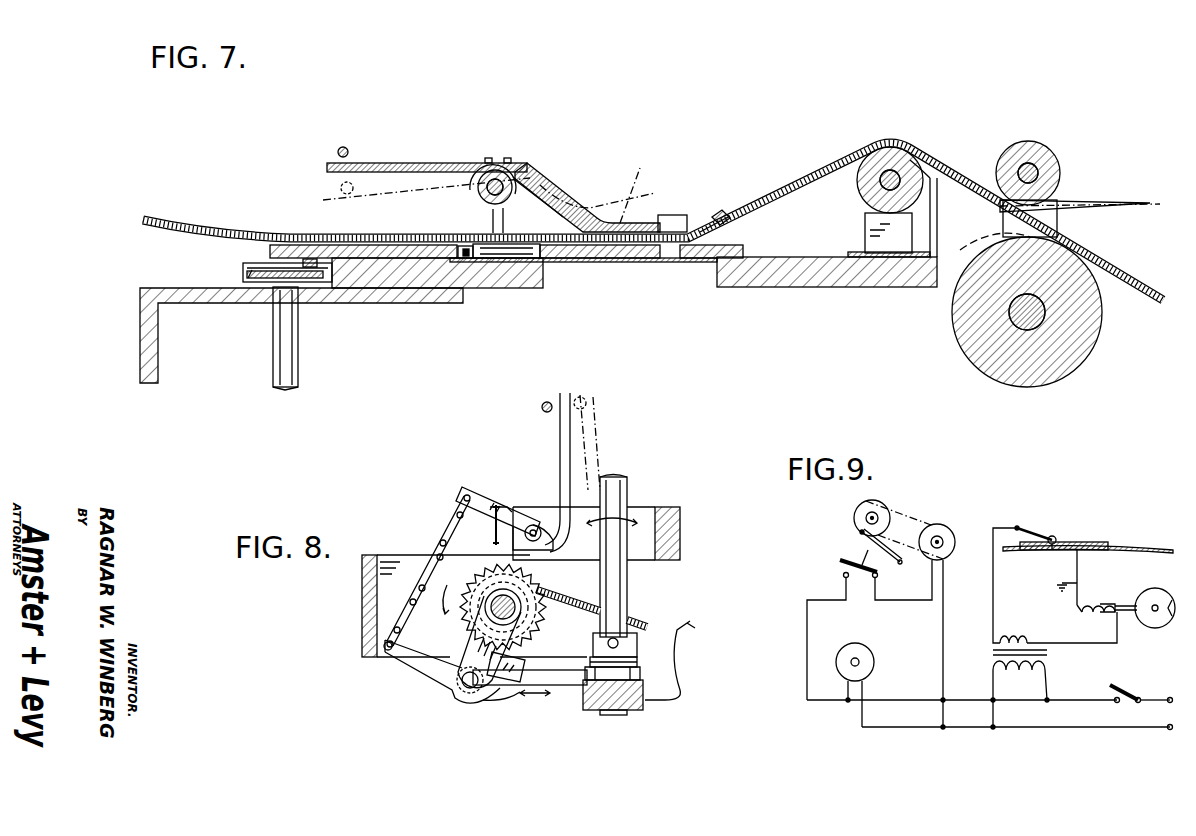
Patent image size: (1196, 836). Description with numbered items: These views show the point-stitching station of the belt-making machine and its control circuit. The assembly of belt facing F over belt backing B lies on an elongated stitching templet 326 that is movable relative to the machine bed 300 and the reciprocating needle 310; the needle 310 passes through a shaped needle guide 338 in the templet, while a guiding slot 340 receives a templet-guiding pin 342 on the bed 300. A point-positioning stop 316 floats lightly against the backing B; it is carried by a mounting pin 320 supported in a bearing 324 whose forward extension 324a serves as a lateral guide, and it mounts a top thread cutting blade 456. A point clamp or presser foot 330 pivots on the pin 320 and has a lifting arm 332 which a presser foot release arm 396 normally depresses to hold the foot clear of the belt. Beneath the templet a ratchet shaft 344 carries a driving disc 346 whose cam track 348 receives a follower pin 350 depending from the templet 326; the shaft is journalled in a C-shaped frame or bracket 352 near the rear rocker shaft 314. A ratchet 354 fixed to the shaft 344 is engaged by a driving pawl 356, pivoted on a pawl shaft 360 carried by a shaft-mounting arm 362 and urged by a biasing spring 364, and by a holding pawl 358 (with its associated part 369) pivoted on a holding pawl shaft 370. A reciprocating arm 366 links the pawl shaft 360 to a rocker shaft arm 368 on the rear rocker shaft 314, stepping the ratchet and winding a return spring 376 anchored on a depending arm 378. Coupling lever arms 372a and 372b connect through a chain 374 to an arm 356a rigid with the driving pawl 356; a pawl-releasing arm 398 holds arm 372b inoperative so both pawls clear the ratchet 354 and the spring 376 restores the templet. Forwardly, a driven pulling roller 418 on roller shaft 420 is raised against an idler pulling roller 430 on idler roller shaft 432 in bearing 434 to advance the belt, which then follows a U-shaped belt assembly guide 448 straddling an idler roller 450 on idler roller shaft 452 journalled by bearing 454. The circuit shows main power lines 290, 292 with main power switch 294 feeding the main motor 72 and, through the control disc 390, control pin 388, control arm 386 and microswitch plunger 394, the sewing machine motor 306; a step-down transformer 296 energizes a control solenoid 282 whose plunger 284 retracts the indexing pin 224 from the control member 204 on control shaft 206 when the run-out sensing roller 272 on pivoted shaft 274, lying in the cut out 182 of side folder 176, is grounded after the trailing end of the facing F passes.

In FIG. 7, the belt backing B is at (781, 203).
In FIG. 7, the belt facing F is at (817, 177).
In FIG. 7, the machine bed 300 is at (790, 280).
In FIG. 7, the needle 310 is at (628, 245).
In FIG. 7, the point-positioning stop 316 is at (723, 212).
In FIG. 7, the mounting pin 320 is at (481, 195).
In FIG. 7, the bearing 324 is at (523, 195).
In FIG. 7, the forward extension 324a is at (672, 220).
In FIG. 7, the stitching templet 326 is at (705, 252).
In FIG. 7, the point clamp 330 is at (618, 225).
In FIG. 7, the lifting arm 332 is at (440, 175).
In FIG. 7, the needle guide 338 is at (670, 253).
In FIG. 7, the guiding slot 340 is at (520, 249).
In FIG. 7, the templet-guiding pin 342 is at (468, 260).
In FIG. 7, the ratchet shaft 344 is at (282, 372).
In FIG. 8, the ratchet shaft 344 is at (515, 596).
In FIG. 7, the driving disc 346 is at (248, 279).
In FIG. 7, the cam track 348 is at (245, 265).
In FIG. 7, the follower pin 350 is at (310, 268).
In FIG. 7, the frame 352 is at (145, 337).
In FIG. 8, the frame 352 is at (362, 609).
In FIG. 8, the ratchet 354 is at (467, 620).
In FIG. 8, the driving pawl 356 is at (520, 699).
In FIG. 8, the arm 356a is at (402, 658).
In FIG. 8, the holding pawl 358 is at (494, 537).
In FIG. 8, the pawl shaft 360 is at (462, 694).
In FIG. 8, the shaft-mounting arm 362 is at (518, 666).
In FIG. 8, the biasing spring 364 is at (497, 678).
In FIG. 8, the reciprocating arm 366 is at (570, 685).
In FIG. 8, the rocker shaft arm 368 is at (628, 657).
In FIG. 8, the pawl tip 369 is at (507, 505).
In FIG. 8, the holding pawl shaft 370 is at (537, 527).
In FIG. 8, the arm 372a is at (483, 495).
In FIG. 8, the arm 372b is at (567, 433).
In FIG. 8, the chain 374 is at (433, 580).
In FIG. 8, the return spring 376 is at (634, 619).
In FIG. 8, the depending arm 378 is at (685, 643).
In FIG. 7, the presser foot release arm 396 is at (335, 158).
In FIG. 8, the pawl-releasing arm 398 is at (552, 400).
In FIG. 8, the rear rocker shaft 314 is at (625, 492).
In FIG. 7, the driven pulling roller 418 is at (1035, 348).
In FIG. 7, the roller shaft 420 is at (1018, 312).
In FIG. 7, the idler pulling roller 430 is at (1027, 146).
In FIG. 7, the idler roller shaft 432 is at (1037, 170).
In FIG. 7, the guide 434 is at (1053, 216).
In FIG. 7, the U-shaped belt assembly guide 448 is at (937, 190).
In FIG. 7, the idler roller 450 is at (897, 160).
In FIG. 7, the idler roller shaft 452 is at (878, 185).
In FIG. 7, the bearing 454 is at (870, 225).
In FIG. 7, the top thread cutting blade 456 is at (733, 222).
In FIG. 9, the main motor 72 is at (870, 658).
In FIG. 9, the side folder 176 is at (1095, 542).
In FIG. 9, the elongated cut out 182 is at (1073, 542).
In FIG. 9, the control disc 204 is at (1163, 593).
In FIG. 9, the control shaft 206 is at (1155, 618).
In FIG. 9, the indexing pin 224 is at (1135, 606).
In FIG. 9, the run-out sensing roller 272 is at (1053, 537).
In FIG. 9, the pivoted shaft 274 is at (1018, 532).
In FIG. 9, the control solenoid 282 is at (1092, 613).
In FIG. 9, the plunger 284 is at (1117, 598).
In FIG. 9, the main power line 290 is at (1075, 700).
In FIG. 9, the main power line 292 is at (1075, 727).
In FIG. 9, the main power switch 294 is at (1127, 687).
In FIG. 9, the step-down transformer 296 is at (1047, 660).
In FIG. 9, the sewing machine motor 306 is at (941, 530).
In FIG. 9, the control arm 386 is at (898, 562).
In FIG. 9, the control pin 388 is at (860, 533).
In FIG. 9, the control disc 390 is at (866, 502).
In FIG. 9, the plunger 394 is at (840, 562).